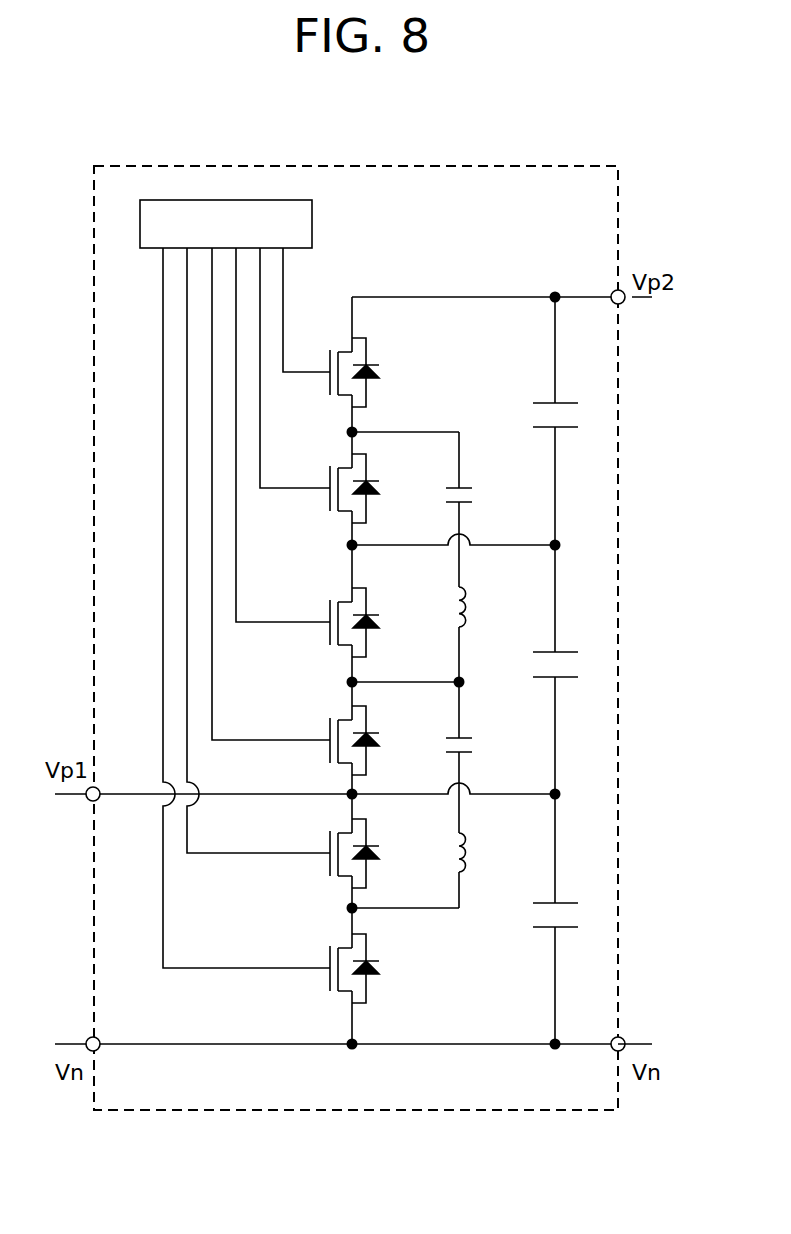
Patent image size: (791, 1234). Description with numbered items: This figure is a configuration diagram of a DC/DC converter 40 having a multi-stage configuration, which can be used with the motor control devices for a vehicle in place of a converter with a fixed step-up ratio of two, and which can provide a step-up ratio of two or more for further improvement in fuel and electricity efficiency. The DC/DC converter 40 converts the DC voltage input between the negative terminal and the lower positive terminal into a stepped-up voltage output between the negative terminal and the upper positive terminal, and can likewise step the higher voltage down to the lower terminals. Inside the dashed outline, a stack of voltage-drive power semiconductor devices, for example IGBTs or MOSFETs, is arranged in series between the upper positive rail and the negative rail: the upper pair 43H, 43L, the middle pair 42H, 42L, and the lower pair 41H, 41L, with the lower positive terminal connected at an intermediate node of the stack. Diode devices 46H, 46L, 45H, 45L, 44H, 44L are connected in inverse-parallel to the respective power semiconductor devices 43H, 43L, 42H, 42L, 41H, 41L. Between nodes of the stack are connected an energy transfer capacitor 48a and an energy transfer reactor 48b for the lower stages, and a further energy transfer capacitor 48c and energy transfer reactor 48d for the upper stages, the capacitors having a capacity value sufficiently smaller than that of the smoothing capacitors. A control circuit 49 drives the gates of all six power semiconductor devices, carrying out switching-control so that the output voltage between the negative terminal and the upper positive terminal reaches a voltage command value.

The DC/DC converter 40 is at (568, 165).
The control circuit 49 is at (312, 228).
The voltage-drive power semiconductor device 43H is at (326, 366).
The voltage-drive power semiconductor device 43L is at (326, 482).
The voltage-drive power semiconductor device 42H is at (326, 616).
The voltage-drive power semiconductor device 42L is at (326, 734).
The voltage-drive power semiconductor device 41H is at (326, 846).
The voltage-drive power semiconductor device 41L is at (326, 960).
The diode device 46H is at (372, 364).
The diode device 46L is at (372, 480).
The diode device 45H is at (372, 614).
The diode device 45L is at (372, 732).
The diode device 44H is at (372, 844).
The diode device 44L is at (372, 958).
The energy transfer capacitor 48a is at (470, 735).
The energy transfer reactor 48b is at (472, 873).
The energy transfer capacitor 48c is at (469, 485).
The energy transfer reactor 48d is at (472, 612).